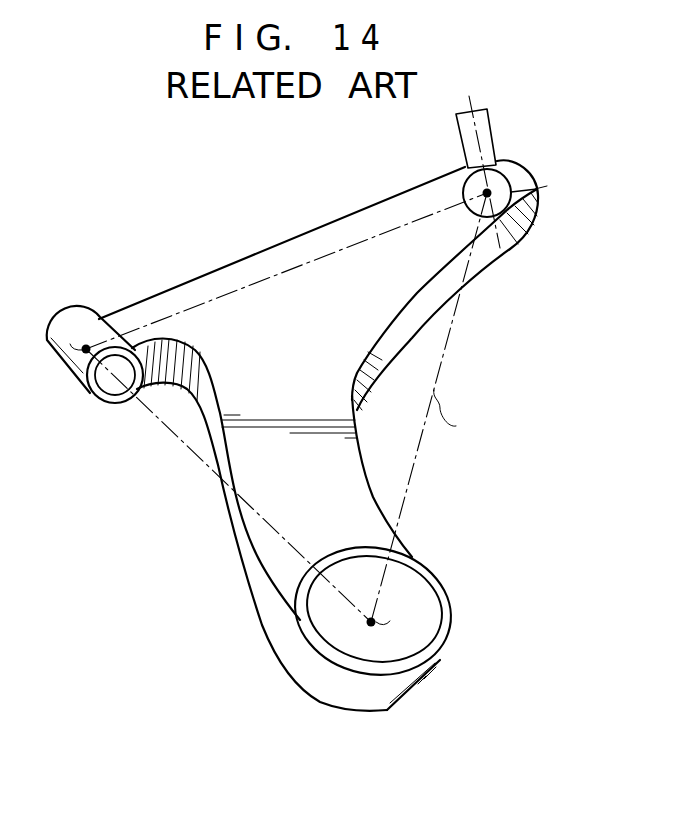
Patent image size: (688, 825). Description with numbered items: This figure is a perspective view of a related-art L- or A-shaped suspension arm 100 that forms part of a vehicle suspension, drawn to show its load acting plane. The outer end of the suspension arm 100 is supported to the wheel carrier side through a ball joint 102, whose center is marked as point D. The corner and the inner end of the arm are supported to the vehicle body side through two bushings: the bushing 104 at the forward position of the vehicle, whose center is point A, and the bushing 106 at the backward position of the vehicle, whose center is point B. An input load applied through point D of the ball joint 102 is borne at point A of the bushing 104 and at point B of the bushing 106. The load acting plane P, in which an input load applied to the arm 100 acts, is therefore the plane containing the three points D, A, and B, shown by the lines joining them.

The suspension arm 100 is at (244, 609).
The ball joint 102 is at (503, 178).
The bushing 104 is at (108, 388).
The bushing 106 is at (337, 632).